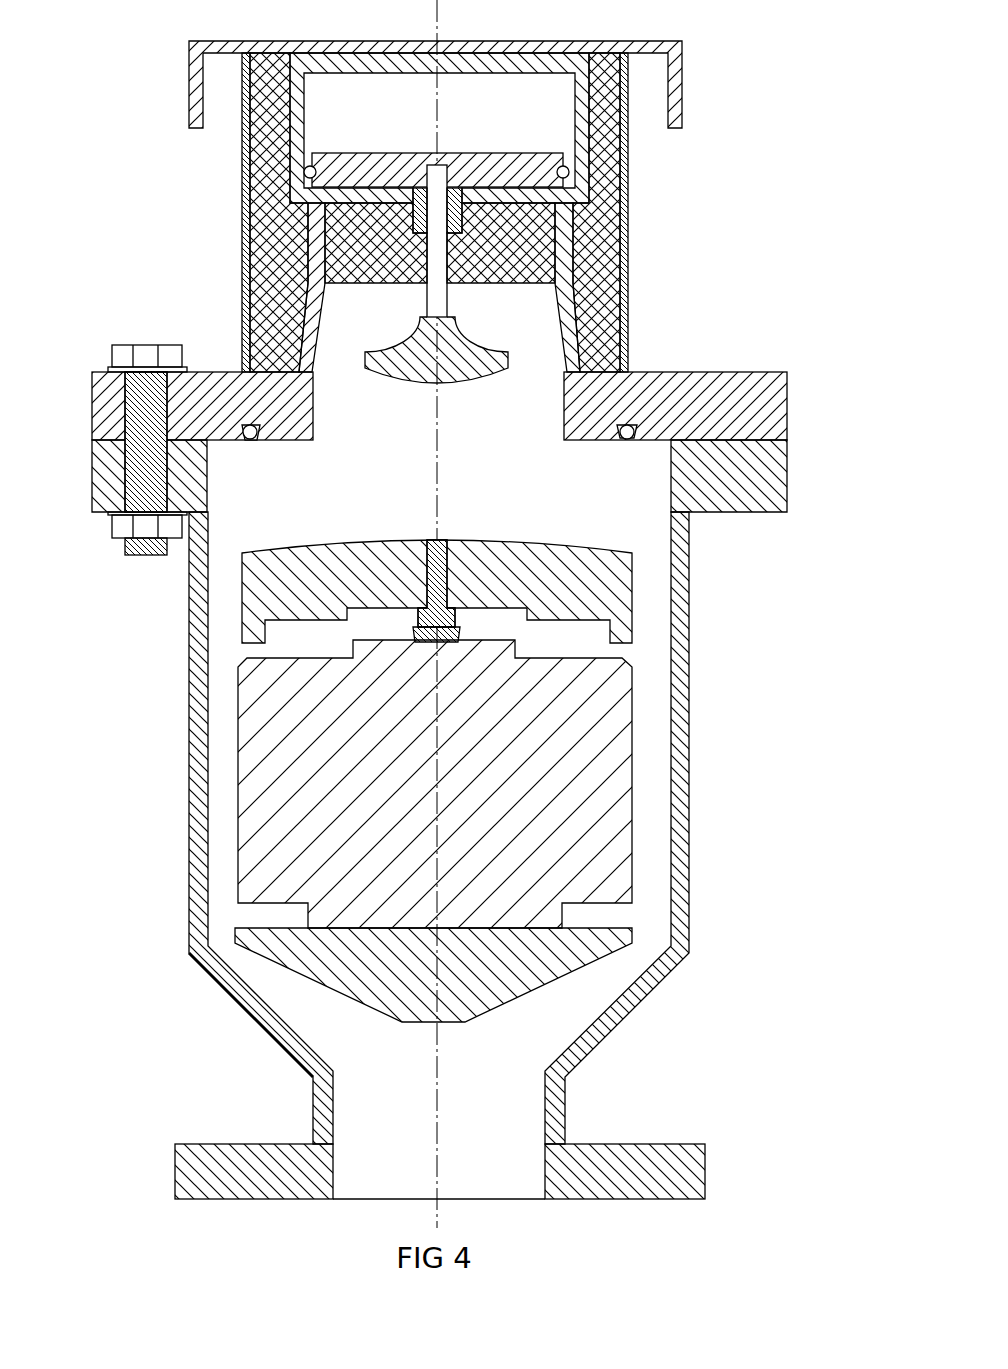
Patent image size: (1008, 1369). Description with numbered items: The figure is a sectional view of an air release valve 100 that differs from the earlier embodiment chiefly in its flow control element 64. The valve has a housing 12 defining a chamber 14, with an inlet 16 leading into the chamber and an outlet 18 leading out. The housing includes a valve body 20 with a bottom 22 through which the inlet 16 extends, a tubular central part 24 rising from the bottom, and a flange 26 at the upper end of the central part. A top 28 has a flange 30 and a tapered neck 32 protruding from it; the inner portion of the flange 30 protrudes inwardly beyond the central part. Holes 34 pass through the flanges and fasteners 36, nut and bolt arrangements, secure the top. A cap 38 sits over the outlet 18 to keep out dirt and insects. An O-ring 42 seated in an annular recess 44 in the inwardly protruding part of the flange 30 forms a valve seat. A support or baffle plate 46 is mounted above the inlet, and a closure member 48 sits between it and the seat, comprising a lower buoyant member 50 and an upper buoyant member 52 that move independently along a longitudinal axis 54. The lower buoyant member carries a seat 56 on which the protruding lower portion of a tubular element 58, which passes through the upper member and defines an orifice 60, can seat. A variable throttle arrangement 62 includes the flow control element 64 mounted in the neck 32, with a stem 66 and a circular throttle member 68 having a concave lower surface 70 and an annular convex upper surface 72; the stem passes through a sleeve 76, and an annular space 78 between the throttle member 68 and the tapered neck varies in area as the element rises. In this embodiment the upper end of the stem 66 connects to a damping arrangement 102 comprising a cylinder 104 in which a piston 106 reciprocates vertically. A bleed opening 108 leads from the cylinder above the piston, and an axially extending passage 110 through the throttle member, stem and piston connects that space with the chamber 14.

The housing 12 is at (810, 237).
The chamber 14 is at (240, 537).
The inlet 16 is at (358, 1185).
The outlet 18 is at (545, 276).
The valve body 20 is at (158, 902).
The bottom 22 is at (200, 1140).
The tubular central part 24 is at (689, 833).
The flange 26 is at (787, 485).
The top 28 is at (742, 338).
The flange 30 is at (765, 383).
The neck 32 is at (577, 278).
The holes 34 is at (120, 417).
The fasteners 36 is at (128, 345).
The cap 38 is at (682, 95).
The O-ring 42 is at (625, 440).
The annular recess 44 is at (262, 442).
The support or baffle plate 46 is at (388, 1008).
The closure member 48 is at (640, 657).
The lower buoyant member 50 is at (630, 733).
The upper buoyant member 52 is at (627, 583).
The longitudinal axis 54 is at (438, 1120).
The seat 56 is at (445, 627).
The tubular element 58 is at (452, 548).
The orifice 60 is at (428, 540).
The variable throttle arrangement 62 is at (273, 302).
The flow control element 64 is at (278, 232).
The stem 66 is at (447, 268).
The throttle member or head 68 is at (487, 362).
The concave lower surface 70 is at (452, 385).
The annular convex upper surface 72 is at (475, 333).
The sleeve 76 is at (413, 225).
The annular space 78 is at (338, 352).
The valve 100 is at (155, 103).
The damping arrangement 102 is at (223, 173).
The cylinder 104 is at (290, 113).
The piston 106 is at (553, 163).
The bleed opening 108 is at (583, 80).
The axially extending passage 110 is at (435, 365).